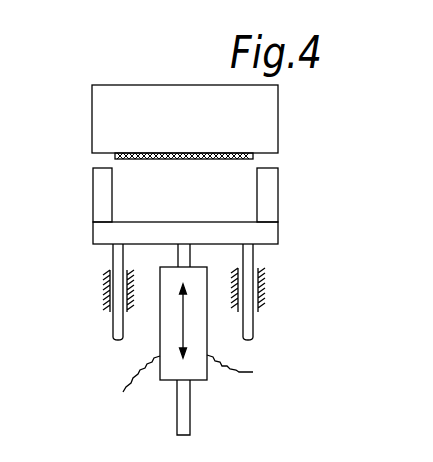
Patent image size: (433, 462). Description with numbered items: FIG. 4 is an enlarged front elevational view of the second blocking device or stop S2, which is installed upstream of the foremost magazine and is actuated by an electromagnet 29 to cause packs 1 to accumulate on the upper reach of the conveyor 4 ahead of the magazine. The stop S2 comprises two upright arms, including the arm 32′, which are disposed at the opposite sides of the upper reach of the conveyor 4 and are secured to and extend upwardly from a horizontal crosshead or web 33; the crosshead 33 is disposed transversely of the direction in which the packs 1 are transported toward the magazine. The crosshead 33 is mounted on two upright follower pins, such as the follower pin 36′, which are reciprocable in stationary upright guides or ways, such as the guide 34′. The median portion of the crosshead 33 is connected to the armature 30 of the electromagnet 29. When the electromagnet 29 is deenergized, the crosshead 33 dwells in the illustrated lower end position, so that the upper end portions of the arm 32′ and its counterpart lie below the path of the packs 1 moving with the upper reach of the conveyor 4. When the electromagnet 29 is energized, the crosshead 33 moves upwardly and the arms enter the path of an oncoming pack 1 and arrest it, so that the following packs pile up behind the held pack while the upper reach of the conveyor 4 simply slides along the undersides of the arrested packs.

The pack 1 is at (177, 85).
The conveyor 4 is at (184, 159).
The upright arm 32′ is at (97, 198).
The crosshead 33 is at (110, 237).
The stationary upright guide 34′ is at (113, 333).
The upright follower pin 36′ is at (92, 295).
The electromagnet 29 is at (165, 382).
The armature 30 is at (190, 405).
The second blocking device or stop S2 is at (313, 156).